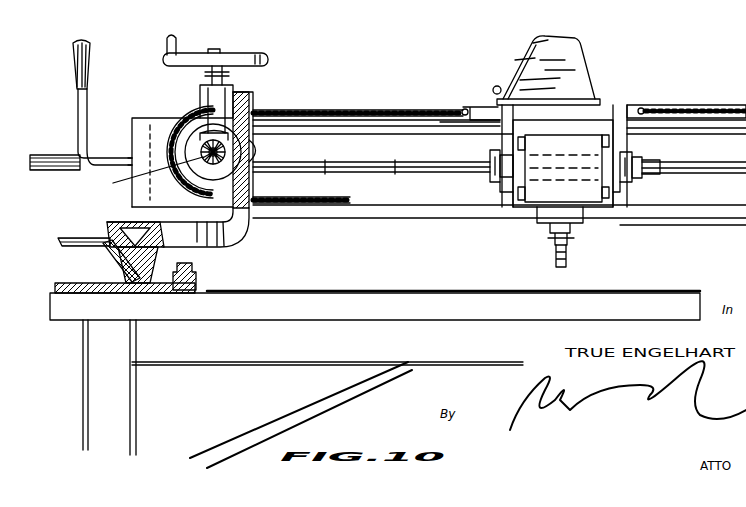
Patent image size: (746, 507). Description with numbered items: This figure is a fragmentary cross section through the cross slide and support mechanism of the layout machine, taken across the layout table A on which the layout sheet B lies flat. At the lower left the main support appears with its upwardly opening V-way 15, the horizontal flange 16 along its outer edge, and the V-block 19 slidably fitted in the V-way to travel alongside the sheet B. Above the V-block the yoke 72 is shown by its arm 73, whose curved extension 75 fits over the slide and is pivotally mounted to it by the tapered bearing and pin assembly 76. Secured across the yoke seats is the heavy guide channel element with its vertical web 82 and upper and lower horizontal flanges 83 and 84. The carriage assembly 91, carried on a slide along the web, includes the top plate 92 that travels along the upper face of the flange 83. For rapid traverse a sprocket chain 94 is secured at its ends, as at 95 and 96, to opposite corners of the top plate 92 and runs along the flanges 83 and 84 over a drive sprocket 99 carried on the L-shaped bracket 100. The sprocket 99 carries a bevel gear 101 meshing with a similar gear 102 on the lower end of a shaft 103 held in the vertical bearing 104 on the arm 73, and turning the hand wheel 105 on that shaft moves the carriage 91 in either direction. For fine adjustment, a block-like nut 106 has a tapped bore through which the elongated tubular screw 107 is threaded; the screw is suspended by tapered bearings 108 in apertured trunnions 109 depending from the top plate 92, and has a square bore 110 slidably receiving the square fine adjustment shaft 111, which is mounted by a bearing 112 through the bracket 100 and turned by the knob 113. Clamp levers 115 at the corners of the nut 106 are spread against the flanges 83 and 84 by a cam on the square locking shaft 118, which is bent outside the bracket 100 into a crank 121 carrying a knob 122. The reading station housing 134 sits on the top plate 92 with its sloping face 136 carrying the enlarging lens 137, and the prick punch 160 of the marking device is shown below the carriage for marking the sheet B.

The V-way 15 is at (112, 262).
The flange 16 is at (62, 250).
The V-block 19 is at (108, 229).
The yoke 72 is at (258, 100).
The arm 73 is at (255, 215).
The curved extension 75 is at (190, 250).
The tapered bearing and pin assembly 76 is at (123, 222).
The vertical web 82 is at (402, 136).
The upper horizontal flange 83 is at (439, 122).
The lower horizontal flange 84 is at (381, 209).
The carriage assembly 91 is at (606, 97).
The top plate 92 is at (640, 105).
The sprocket chain 94 is at (370, 109).
The chain end attachment 95 is at (477, 107).
The chain end attachment 96 is at (666, 108).
The drive sprocket 99 is at (255, 156).
The L-shaped bracket 100 is at (157, 128).
The bevel gear 101 is at (166, 158).
The bevel gear 102 is at (201, 126).
The shaft 103 is at (216, 45).
The vertical bearing 104 is at (200, 90).
The hand wheel 105 is at (267, 57).
The nut 106 is at (588, 225).
The tubular screw 107 is at (642, 178).
The tapered bearings 108 is at (490, 183).
The apertured trunnions 109 is at (500, 195).
The square bore 110 is at (528, 212).
The fine adjustment shaft 111 is at (444, 160).
The bearing 112 is at (132, 148).
The knob 113 is at (60, 154).
The clamp levers 115 is at (518, 143).
The locking shaft 118 is at (360, 175).
The crank 121 is at (88, 105).
The knob 122 is at (89, 60).
The housing 134 is at (570, 63).
The sloping face 136 is at (549, 41).
The enlarging lens 137 is at (519, 51).
The prick punch 160 is at (556, 262).
The layout table A is at (244, 364).
The layout sheet B is at (338, 292).